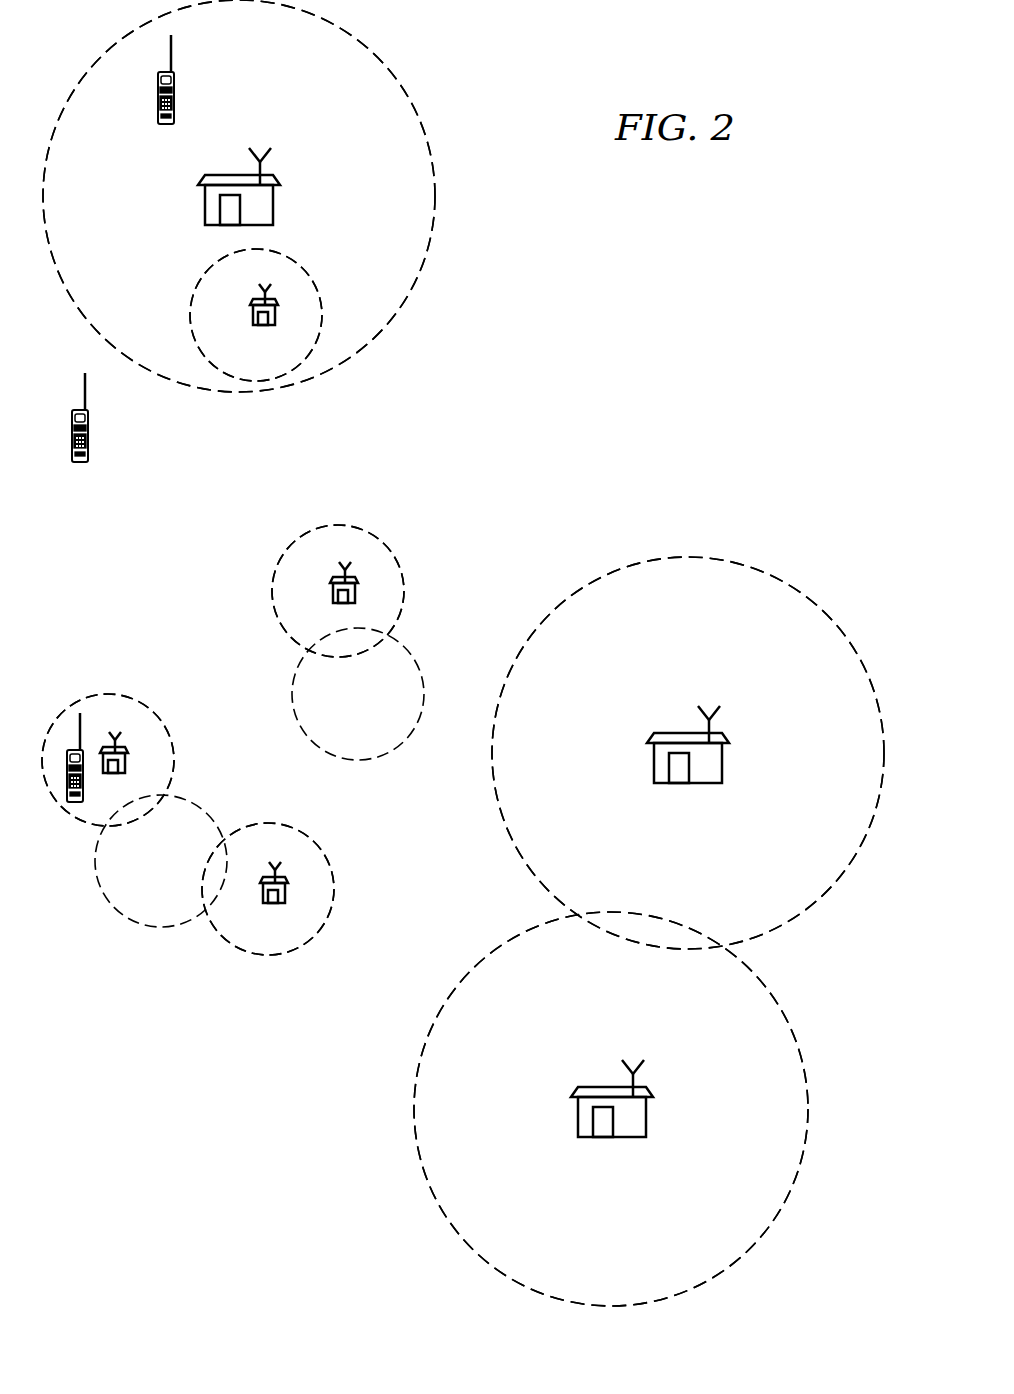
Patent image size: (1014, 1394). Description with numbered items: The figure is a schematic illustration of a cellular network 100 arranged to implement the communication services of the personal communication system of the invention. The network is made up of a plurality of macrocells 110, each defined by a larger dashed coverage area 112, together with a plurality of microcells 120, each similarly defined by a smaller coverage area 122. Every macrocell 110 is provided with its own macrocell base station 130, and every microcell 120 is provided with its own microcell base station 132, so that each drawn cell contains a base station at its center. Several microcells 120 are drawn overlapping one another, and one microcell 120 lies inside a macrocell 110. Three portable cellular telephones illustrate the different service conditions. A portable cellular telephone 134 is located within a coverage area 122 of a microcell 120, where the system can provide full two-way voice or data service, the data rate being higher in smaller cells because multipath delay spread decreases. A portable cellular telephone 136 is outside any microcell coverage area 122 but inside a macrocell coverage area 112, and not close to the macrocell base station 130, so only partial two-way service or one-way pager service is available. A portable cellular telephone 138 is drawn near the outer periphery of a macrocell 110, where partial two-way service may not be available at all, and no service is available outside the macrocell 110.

The cellular network 100 is at (604, 389).
The macrocell 110 is at (412, 107).
The macrocell coverage area 112 is at (413, 151).
The microcell 120 is at (312, 270).
The microcell coverage area 122 is at (317, 297).
The macrocell base station 130 is at (273, 208).
The microcell base station 132 is at (276, 318).
The portable cellular telephone 134 is at (72, 801).
The portable cellular telephone 136 is at (176, 100).
The portable cellular telephone 138 is at (88, 433).